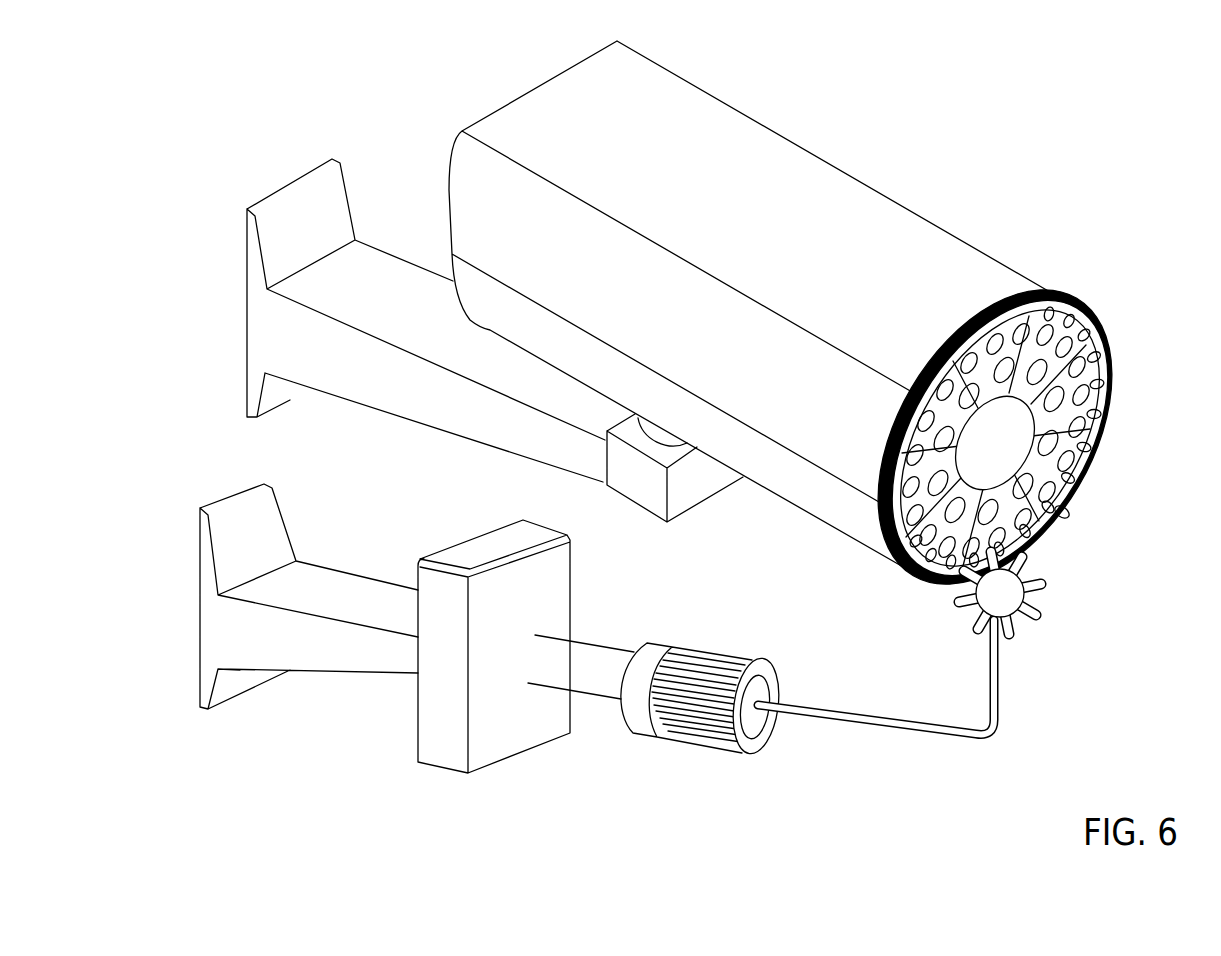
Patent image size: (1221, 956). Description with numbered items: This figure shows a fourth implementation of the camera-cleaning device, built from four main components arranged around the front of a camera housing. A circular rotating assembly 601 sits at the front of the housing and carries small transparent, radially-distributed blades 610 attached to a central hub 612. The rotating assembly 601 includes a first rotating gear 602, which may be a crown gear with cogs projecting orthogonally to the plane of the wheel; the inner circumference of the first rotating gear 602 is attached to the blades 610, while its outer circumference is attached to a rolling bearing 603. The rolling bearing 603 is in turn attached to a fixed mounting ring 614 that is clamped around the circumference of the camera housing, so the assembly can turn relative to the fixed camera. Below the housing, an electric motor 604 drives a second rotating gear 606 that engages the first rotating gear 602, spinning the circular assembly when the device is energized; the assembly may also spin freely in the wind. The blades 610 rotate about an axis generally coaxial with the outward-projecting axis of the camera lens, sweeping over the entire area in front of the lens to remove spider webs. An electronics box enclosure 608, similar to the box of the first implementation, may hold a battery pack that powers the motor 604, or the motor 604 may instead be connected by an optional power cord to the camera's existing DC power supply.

The circular rotating assembly 601 is at (834, 333).
The first rotating gear 602 is at (1060, 508).
The rolling bearing 603 is at (1090, 452).
The electric motor 604 is at (678, 750).
The second rotating gear 606 is at (1040, 602).
The electronics box enclosure 608 is at (445, 780).
The blades 610 is at (1053, 330).
The hub 612 is at (933, 365).
The fixed mounting ring 614 is at (968, 322).